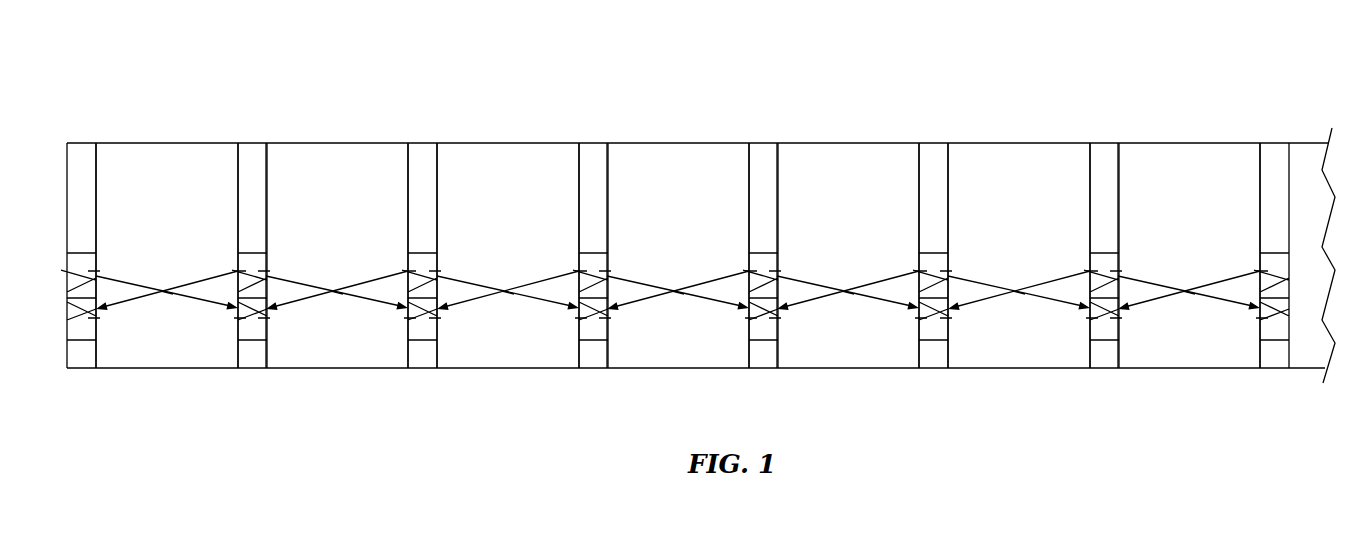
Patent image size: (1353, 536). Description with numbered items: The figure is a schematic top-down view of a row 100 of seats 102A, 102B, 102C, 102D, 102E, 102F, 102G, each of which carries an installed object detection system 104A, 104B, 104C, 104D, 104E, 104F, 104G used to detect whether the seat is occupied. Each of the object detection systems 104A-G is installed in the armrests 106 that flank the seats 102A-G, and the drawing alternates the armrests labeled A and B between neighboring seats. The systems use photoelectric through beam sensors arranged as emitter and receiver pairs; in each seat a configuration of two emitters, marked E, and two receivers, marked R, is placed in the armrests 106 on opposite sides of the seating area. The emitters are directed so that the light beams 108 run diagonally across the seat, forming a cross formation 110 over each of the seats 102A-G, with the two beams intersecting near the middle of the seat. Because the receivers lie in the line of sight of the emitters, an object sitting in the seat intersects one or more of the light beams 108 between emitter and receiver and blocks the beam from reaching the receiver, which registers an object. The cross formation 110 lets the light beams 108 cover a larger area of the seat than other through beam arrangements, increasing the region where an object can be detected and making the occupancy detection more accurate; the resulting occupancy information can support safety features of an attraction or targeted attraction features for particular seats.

The row 100 is at (1223, 47).
The seat 102A is at (165, 133).
The seat 102B is at (345, 234).
The seat 102C is at (516, 234).
The seat 102D is at (686, 234).
The seat 102E is at (855, 234).
The seat 102F is at (1026, 234).
The seat 102G is at (1197, 234).
The object detection system 104A is at (109, 245).
The object detection system 104B is at (337, 274).
The object detection system 104C is at (508, 274).
The object detection system 104D is at (678, 274).
The object detection system 104E is at (848, 274).
The object detection system 104F is at (1019, 274).
The object detection system 104G is at (1189, 274).
The armrest 106 is at (83, 372).
The light beam 108 is at (120, 300).
The cross formation 110 is at (167, 296).